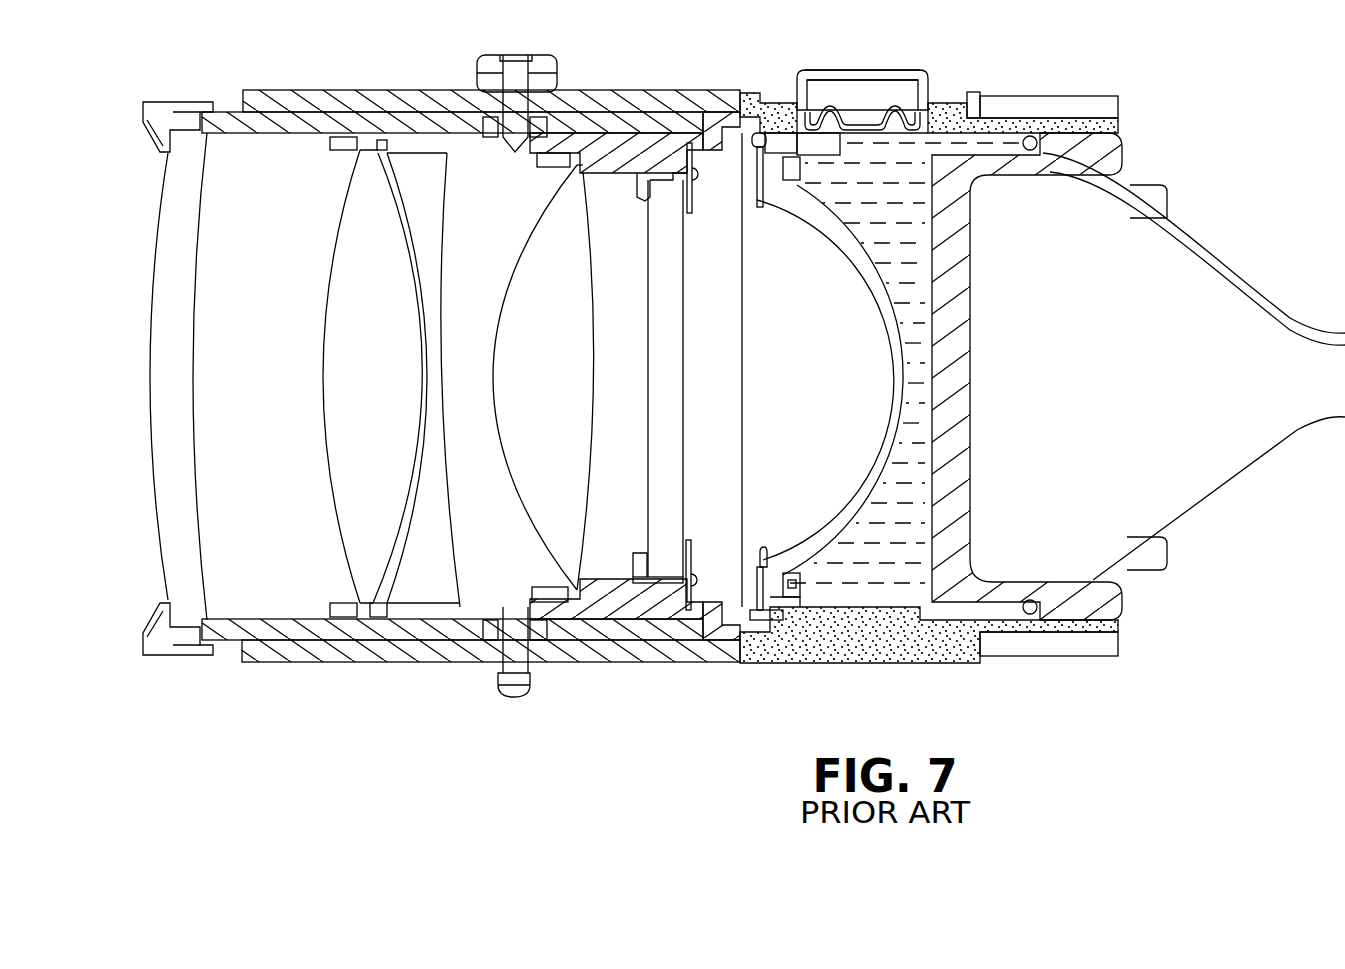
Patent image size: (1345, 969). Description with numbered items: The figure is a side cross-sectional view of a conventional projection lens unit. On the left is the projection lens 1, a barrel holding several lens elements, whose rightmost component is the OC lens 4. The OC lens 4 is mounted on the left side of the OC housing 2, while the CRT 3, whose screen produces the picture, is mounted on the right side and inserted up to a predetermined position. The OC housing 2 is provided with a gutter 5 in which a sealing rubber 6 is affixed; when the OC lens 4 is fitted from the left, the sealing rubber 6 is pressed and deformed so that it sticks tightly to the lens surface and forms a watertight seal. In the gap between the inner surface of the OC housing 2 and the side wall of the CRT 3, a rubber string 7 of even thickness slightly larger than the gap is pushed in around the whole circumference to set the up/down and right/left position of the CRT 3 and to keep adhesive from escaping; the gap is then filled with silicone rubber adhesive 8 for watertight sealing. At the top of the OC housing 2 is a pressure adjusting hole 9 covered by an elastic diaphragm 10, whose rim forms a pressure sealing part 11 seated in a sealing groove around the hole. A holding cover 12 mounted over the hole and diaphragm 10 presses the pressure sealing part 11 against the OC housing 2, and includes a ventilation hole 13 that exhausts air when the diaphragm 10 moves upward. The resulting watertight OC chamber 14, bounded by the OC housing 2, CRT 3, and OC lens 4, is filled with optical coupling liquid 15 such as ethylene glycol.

The projection lens 1 is at (137, 712).
The OC housing 2 is at (908, 663).
The CRT 3 is at (1202, 465).
The OC lens 4 is at (843, 240).
The gutter 5 is at (797, 590).
The sealing rubber 6 is at (770, 583).
The rubber string 7 is at (1033, 138).
The silicone rubber adhesive 8 is at (1133, 150).
The pressure adjusting hole 9 is at (833, 143).
The diaphragm 10 is at (863, 122).
The pressure sealing part 11 is at (933, 107).
The holding cover 12 is at (873, 67).
The ventilation hole 13 is at (827, 70).
The OC chamber 14 is at (895, 260).
The optical coupling liquid 15 is at (867, 527).